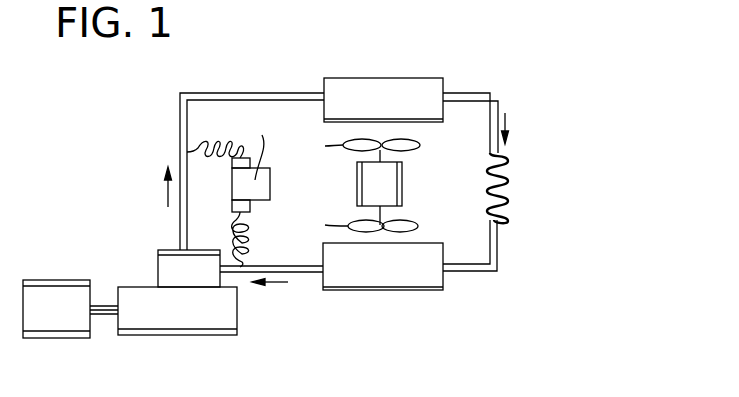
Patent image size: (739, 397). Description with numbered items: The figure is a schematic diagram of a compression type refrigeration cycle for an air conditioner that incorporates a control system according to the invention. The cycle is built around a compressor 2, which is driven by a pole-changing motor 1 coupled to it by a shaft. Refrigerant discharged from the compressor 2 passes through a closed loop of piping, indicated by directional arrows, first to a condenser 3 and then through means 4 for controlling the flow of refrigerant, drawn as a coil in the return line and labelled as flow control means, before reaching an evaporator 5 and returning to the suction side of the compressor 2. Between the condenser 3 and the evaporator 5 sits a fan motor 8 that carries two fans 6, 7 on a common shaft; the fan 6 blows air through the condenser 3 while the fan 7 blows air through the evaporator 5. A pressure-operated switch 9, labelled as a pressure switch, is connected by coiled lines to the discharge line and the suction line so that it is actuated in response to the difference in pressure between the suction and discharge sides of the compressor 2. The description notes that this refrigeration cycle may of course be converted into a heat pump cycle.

The pole-changing motor 1 is at (55, 338).
The compressor 2 is at (175, 335).
The condenser 3 is at (380, 78).
The means for controlling the flow of refrigerant 4 is at (580, 168).
The evaporator 5 is at (380, 290).
The fan 6 is at (420, 145).
The fan 7 is at (418, 222).
The fan motor 8 is at (402, 185).
The pressure-operated switch 9 is at (270, 185).